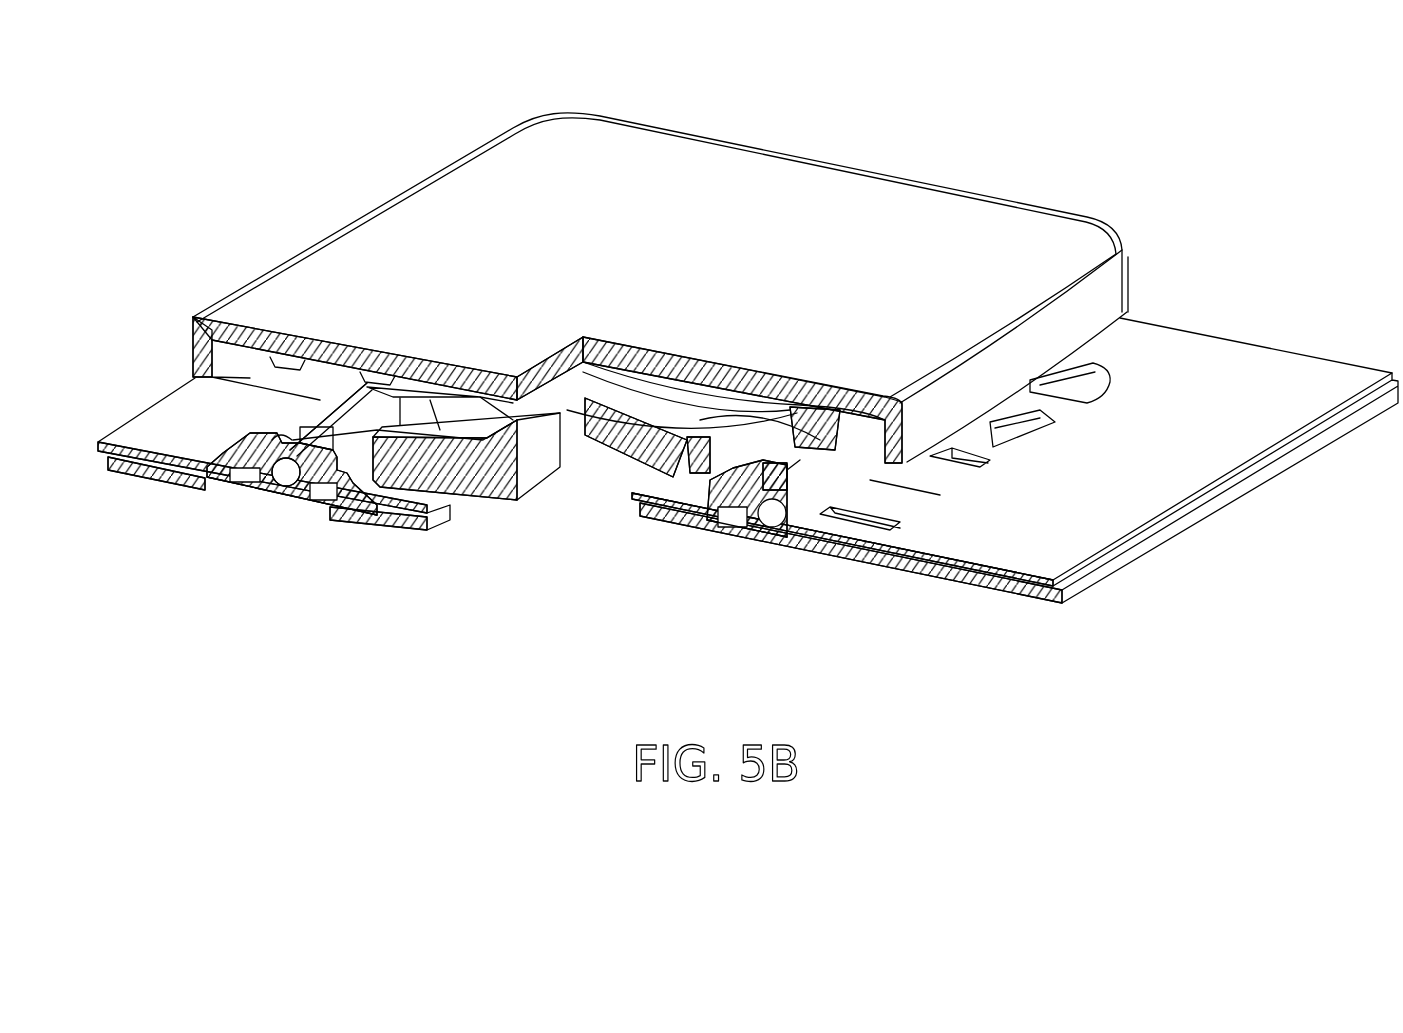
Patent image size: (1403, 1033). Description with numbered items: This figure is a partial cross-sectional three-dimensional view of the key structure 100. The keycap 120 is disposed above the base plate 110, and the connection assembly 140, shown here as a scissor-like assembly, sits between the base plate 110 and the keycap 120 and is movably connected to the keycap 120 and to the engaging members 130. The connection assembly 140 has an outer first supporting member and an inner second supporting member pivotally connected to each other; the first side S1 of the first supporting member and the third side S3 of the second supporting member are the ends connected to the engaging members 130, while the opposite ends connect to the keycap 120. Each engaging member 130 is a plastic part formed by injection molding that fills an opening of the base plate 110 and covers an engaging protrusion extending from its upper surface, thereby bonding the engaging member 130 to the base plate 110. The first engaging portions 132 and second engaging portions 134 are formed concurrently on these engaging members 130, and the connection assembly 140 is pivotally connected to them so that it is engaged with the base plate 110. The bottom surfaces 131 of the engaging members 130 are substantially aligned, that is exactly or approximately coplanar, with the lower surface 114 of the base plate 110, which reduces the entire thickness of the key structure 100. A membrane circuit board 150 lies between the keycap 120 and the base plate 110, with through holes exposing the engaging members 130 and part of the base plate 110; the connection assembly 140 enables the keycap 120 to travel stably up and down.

The key structure 100 is at (970, 699).
The base plate 110 is at (1010, 595).
The lower surface 114 is at (890, 580).
The keycap 120 is at (920, 195).
The engaging member 130 is at (253, 493).
The bottom surface 131 is at (282, 510).
The first engaging portion 132 is at (290, 442).
The second engaging portion 134 is at (790, 520).
The connection assembly 140 is at (487, 483).
The membrane circuit board 150 is at (1173, 488).
The first side S1 is at (323, 405).
The third side S3 is at (790, 513).